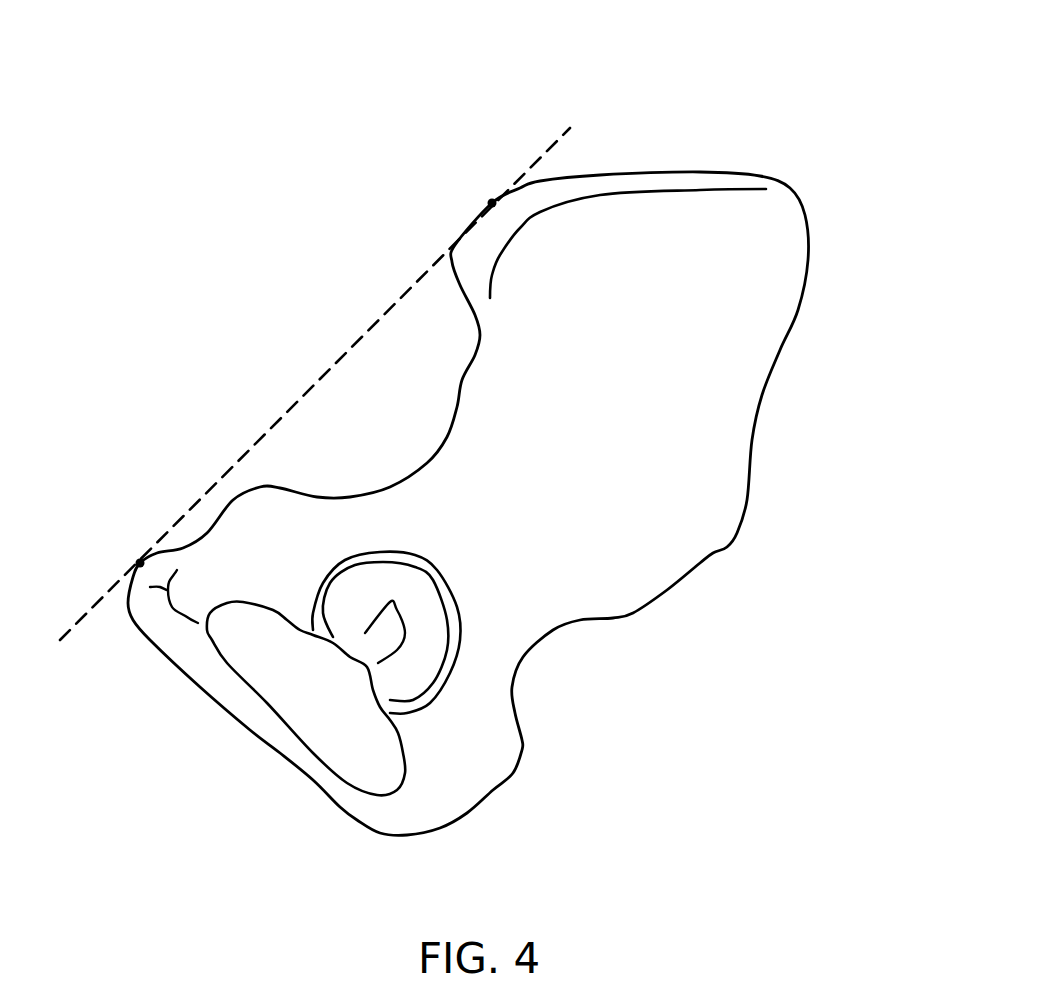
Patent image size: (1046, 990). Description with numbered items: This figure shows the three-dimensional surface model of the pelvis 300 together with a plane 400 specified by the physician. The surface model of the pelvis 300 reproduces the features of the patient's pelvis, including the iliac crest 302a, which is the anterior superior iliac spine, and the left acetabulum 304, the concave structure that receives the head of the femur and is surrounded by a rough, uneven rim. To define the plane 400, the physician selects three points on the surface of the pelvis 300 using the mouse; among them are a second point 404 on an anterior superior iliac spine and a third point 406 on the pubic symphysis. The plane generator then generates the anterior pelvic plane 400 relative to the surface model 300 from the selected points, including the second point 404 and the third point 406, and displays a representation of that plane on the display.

The 3-D surface model of a pelvis 300 is at (768, 388).
The left iliac crest 302a is at (562, 185).
The left acetabulum 304 is at (417, 593).
The plane 400 is at (540, 150).
The second point 404 is at (492, 203).
The third point 406 is at (140, 563).